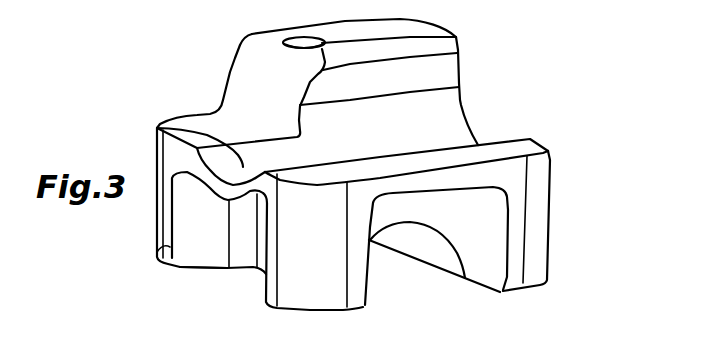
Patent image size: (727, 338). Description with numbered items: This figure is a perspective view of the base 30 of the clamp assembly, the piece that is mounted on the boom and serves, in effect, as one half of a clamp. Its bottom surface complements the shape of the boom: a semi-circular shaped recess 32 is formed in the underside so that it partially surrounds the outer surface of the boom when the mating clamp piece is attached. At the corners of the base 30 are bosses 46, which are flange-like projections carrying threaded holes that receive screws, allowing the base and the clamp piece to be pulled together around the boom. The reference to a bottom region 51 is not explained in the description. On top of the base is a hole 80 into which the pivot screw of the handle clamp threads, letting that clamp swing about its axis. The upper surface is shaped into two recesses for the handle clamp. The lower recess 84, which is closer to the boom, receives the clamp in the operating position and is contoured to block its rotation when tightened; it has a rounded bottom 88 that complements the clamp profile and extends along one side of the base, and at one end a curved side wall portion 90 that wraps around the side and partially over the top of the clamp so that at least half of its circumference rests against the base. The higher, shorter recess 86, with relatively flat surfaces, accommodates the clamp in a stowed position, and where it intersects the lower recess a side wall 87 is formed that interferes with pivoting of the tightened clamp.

The base 30 is at (550, 152).
The semi-circular shaped recess 32 is at (419, 247).
The bosses 46 is at (155, 250).
The bottom surface 51 is at (232, 337).
The hole 80 is at (295, 38).
The recess 84 is at (430, 123).
The recess 86 is at (245, 76).
The side wall 87 is at (193, 112).
The rounded bottom 88 is at (157, 128).
The curved side wall portion 90 is at (437, 65).